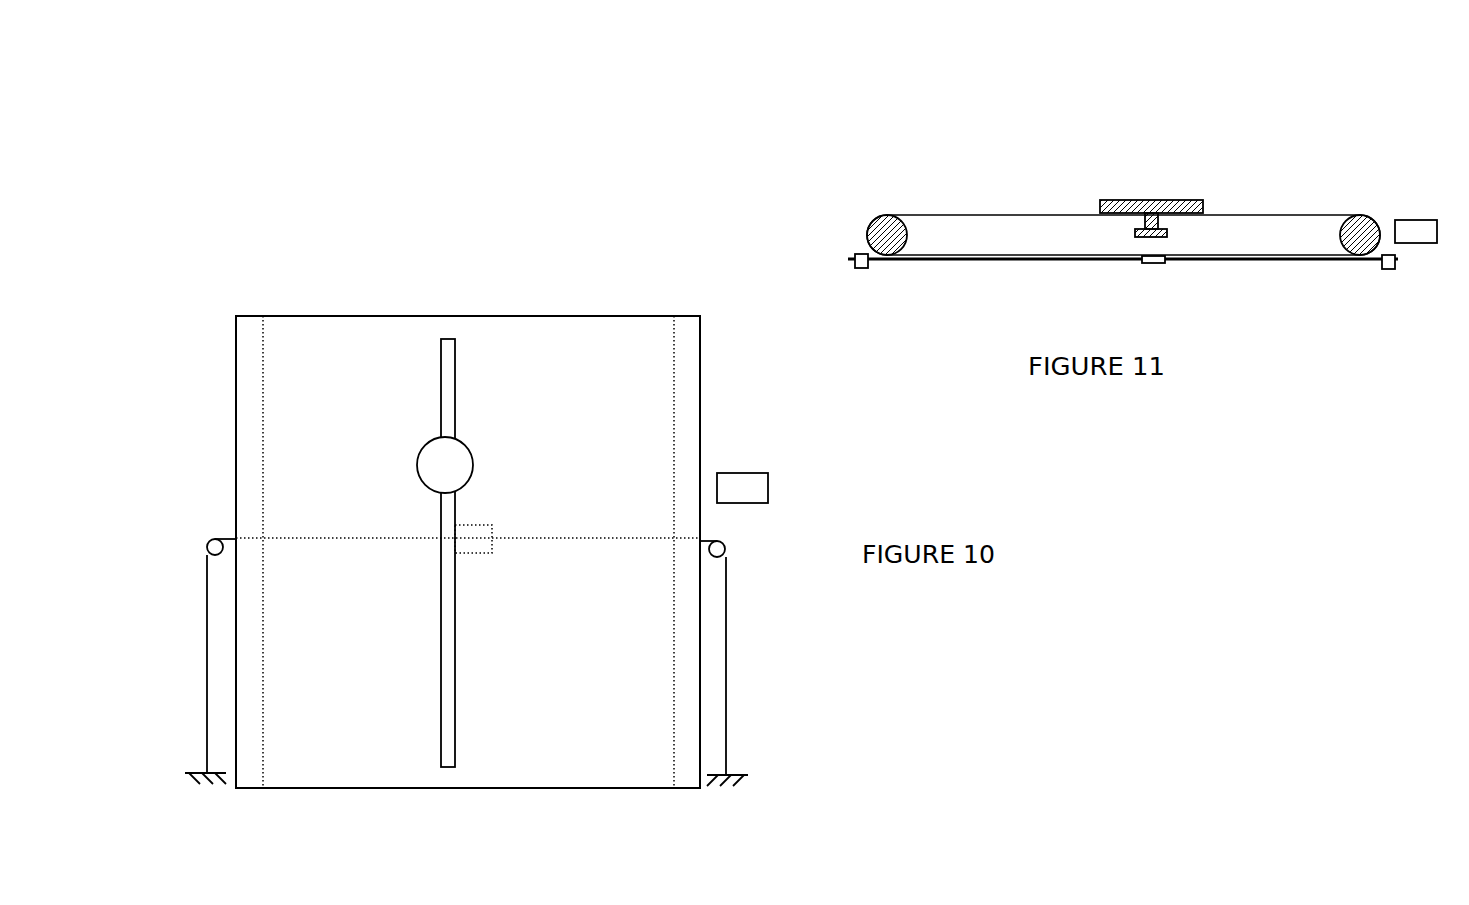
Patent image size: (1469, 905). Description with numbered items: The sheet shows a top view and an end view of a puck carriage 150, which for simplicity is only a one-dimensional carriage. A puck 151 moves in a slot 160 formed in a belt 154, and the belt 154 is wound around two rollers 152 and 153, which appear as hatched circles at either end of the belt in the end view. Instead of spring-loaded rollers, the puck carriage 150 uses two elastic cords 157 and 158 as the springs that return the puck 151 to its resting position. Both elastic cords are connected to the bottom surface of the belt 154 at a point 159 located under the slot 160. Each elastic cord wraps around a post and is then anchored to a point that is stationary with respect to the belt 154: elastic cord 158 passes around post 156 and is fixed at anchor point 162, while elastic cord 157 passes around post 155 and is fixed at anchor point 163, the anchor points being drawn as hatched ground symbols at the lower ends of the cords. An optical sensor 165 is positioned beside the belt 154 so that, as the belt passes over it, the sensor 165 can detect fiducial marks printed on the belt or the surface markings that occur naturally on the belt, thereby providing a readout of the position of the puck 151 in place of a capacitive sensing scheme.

In FIG. 10, the puck carriage 150 is at (210, 268).
In FIG. 11, the puck carriage 150 is at (850, 158).
In FIG. 10, the puck 151 is at (465, 456).
In FIG. 11, the puck 151 is at (1124, 200).
In FIG. 10, the roller 152 is at (253, 393).
In FIG. 11, the roller 152 is at (868, 240).
In FIG. 10, the roller 153 is at (690, 435).
In FIG. 11, the roller 153 is at (1366, 222).
In FIG. 11, the belt 154 is at (1280, 214).
In FIG. 10, the post 155 is at (208, 552).
In FIG. 11, the post 155 is at (856, 268).
In FIG. 10, the post 156 is at (726, 551).
In FIG. 11, the post 156 is at (1384, 269).
In FIG. 10, the elastic cord 157 is at (204, 630).
In FIG. 11, the elastic cord 157 is at (990, 262).
In FIG. 10, the elastic cord 158 is at (728, 630).
In FIG. 11, the elastic cord 158 is at (1282, 262).
In FIG. 10, the connection point 159 is at (472, 540).
In FIG. 11, the connection point 159 is at (1148, 264).
In FIG. 10, the slot 160 is at (447, 380).
In FIG. 10, the anchor point 162 is at (726, 775).
In FIG. 10, the anchor point 163 is at (193, 773).
In FIG. 10, the optical sensor 165 is at (765, 498).
In FIG. 11, the optical sensor 165 is at (1422, 224).